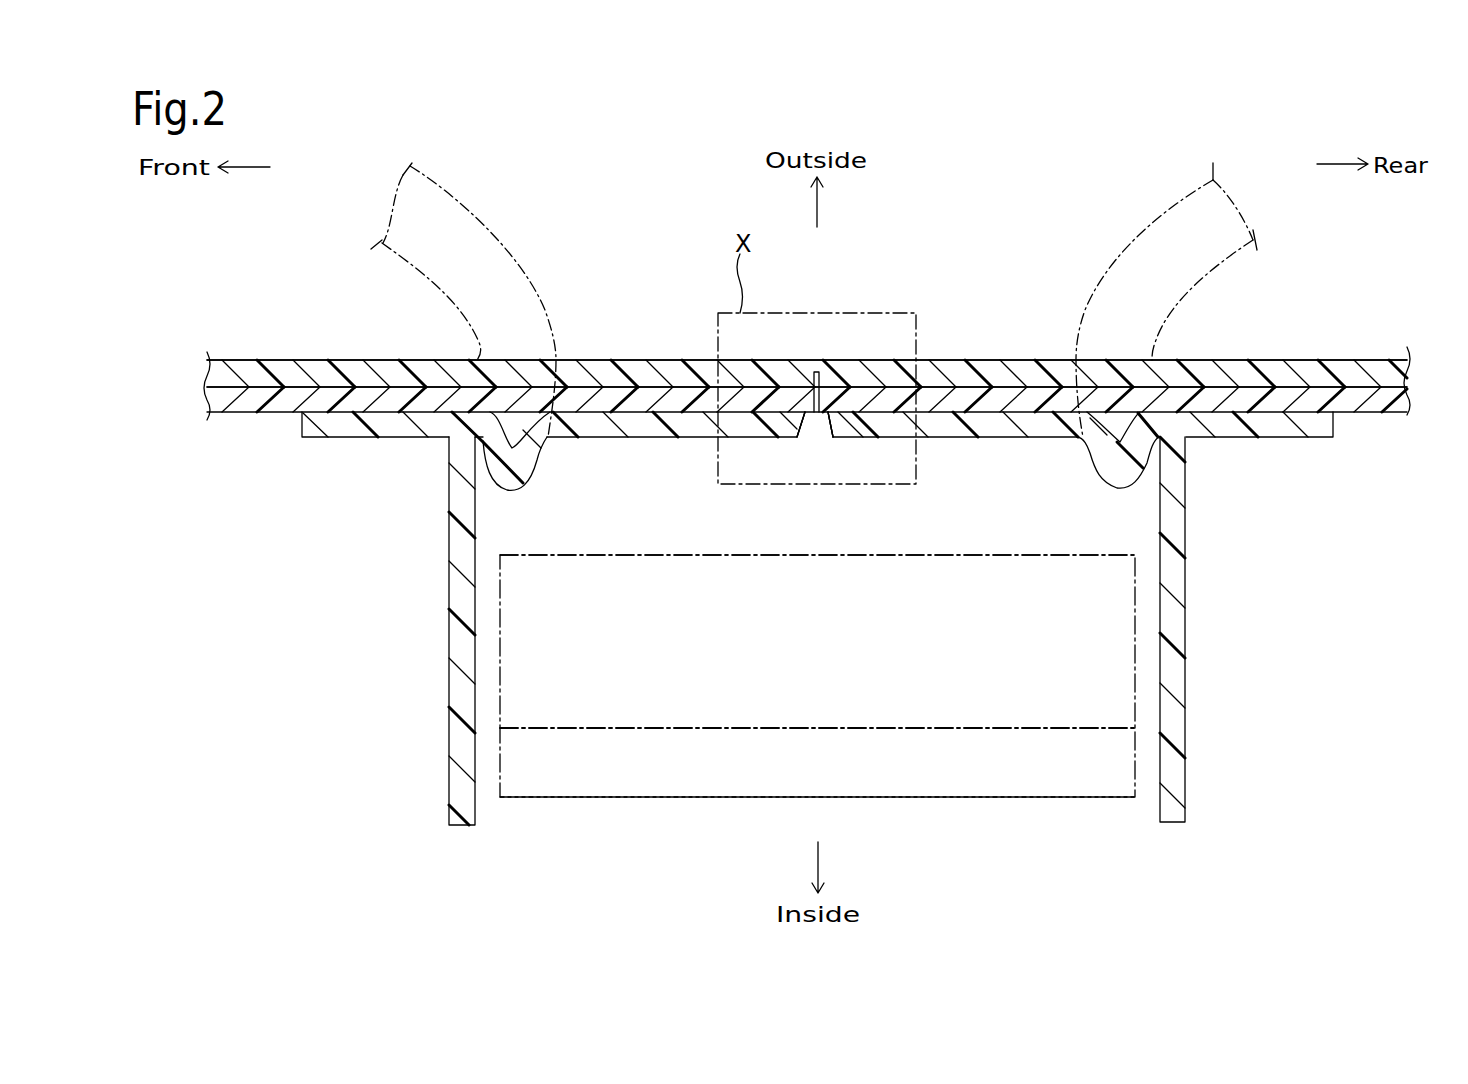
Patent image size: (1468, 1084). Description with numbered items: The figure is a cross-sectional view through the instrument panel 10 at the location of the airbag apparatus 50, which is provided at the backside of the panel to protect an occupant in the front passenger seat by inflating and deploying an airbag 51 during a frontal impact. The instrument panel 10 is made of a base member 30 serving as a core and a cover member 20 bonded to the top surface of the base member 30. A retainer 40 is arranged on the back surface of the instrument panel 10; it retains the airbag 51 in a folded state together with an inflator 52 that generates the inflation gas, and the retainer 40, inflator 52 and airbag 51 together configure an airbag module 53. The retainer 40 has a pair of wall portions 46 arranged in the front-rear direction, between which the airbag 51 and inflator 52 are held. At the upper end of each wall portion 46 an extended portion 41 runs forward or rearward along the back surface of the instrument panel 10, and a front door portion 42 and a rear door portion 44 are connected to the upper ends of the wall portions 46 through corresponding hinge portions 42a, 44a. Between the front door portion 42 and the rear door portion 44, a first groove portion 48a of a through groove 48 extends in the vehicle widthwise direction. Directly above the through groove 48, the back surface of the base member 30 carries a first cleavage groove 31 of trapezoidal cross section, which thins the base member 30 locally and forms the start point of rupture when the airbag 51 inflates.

The instrument panel 10 is at (985, 331).
The cover member 20 is at (207, 368).
The base member 30 is at (207, 403).
The first cleavage groove 31 is at (815, 412).
The retainer 40 is at (430, 683).
The extended portion 41 is at (362, 438).
The front door portion 42 is at (637, 438).
The hinge portion 42a is at (530, 482).
The rear door portion 44 is at (995, 438).
The hinge portion 44a is at (1107, 481).
The wall portions 46 is at (460, 825).
The through groove 48 is at (856, 471).
The first groove portion 48a is at (821, 413).
The airbag apparatus 50 is at (576, 871).
The airbag 51 is at (500, 703).
The inflator 52 is at (500, 765).
The airbag module 53 is at (358, 695).